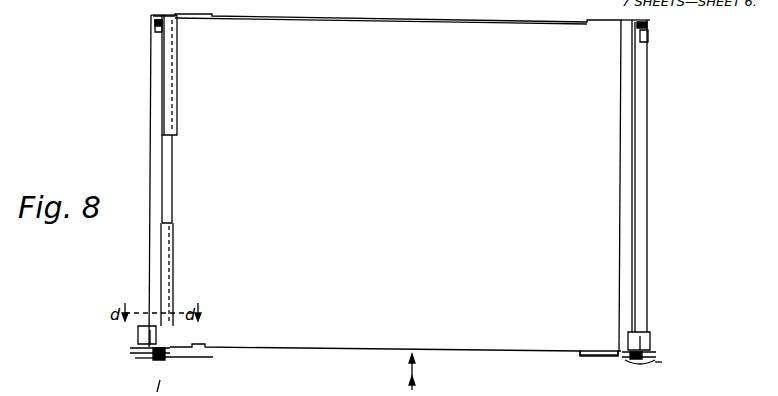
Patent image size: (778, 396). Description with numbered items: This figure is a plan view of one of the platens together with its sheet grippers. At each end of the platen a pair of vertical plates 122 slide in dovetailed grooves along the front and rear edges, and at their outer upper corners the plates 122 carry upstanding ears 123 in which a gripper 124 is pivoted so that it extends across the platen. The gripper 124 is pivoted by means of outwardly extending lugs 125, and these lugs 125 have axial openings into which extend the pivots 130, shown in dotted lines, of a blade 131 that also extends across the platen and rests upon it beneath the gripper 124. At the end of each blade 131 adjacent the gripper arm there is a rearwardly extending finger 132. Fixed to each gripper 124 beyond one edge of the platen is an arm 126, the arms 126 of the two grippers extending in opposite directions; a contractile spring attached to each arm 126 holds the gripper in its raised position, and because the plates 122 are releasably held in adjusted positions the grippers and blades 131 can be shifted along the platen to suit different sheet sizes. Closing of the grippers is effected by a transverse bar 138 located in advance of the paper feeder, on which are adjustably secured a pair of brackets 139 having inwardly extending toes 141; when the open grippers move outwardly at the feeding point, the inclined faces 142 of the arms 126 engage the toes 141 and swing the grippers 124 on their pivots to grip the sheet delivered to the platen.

The vertical plate 122 is at (208, 19).
The upstanding ears 123 is at (157, 22).
The gripper 124 is at (173, 243).
The outwardly extending lugs 125 is at (155, 26).
The arm 126 is at (150, 360).
The pivots 130 is at (157, 33).
The blade 131 is at (173, 182).
The rearwardly extending finger 132 is at (138, 331).
The bar 138 is at (370, 375).
The brackets 139 is at (406, 383).
The inwardly extending toes 141 is at (687, 388).
The inclined faces 142 is at (207, 357).